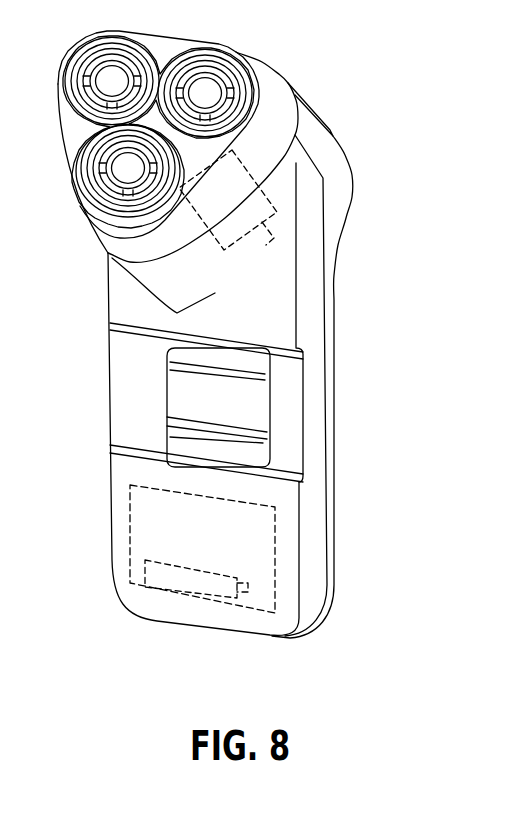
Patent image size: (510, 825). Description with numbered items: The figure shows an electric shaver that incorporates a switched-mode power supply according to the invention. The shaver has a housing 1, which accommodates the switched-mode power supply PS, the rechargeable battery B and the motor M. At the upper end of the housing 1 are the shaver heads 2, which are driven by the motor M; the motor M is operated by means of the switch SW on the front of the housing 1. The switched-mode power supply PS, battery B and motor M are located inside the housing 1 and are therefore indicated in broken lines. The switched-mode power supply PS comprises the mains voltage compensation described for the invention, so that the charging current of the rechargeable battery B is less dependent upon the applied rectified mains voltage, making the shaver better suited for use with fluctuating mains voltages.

The housing 1 is at (275, 312).
The shaver heads 2 is at (82, 65).
The motor M is at (228, 213).
The switch SW is at (185, 398).
The switched-mode power supply PS is at (275, 545).
The rechargeable battery B is at (168, 578).